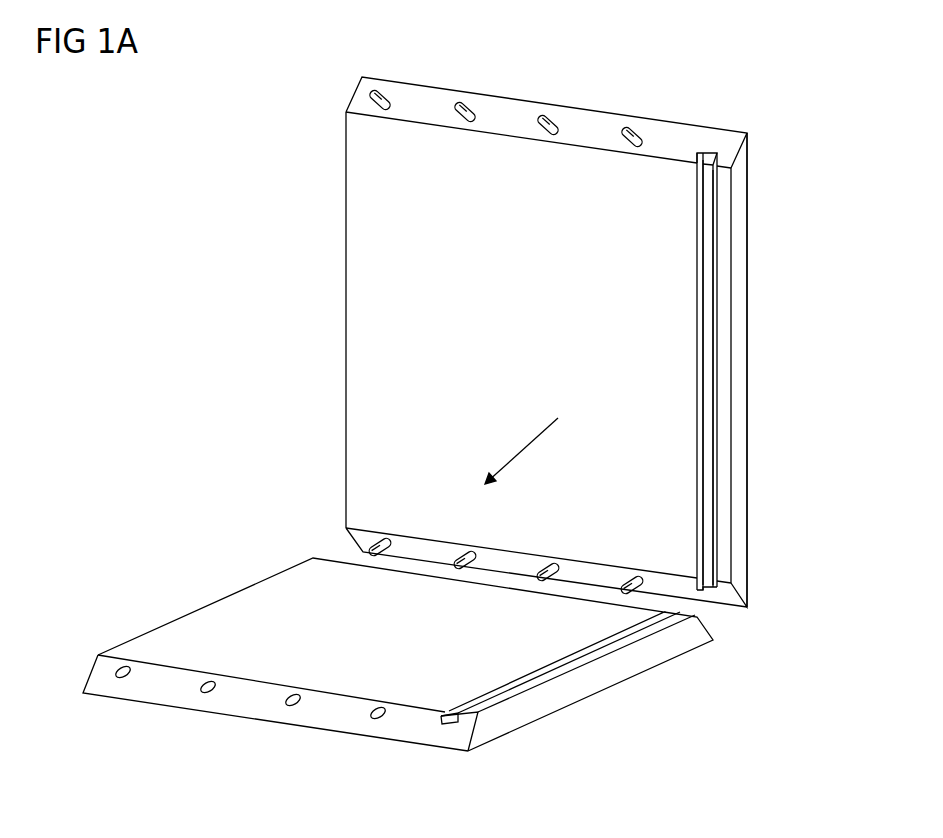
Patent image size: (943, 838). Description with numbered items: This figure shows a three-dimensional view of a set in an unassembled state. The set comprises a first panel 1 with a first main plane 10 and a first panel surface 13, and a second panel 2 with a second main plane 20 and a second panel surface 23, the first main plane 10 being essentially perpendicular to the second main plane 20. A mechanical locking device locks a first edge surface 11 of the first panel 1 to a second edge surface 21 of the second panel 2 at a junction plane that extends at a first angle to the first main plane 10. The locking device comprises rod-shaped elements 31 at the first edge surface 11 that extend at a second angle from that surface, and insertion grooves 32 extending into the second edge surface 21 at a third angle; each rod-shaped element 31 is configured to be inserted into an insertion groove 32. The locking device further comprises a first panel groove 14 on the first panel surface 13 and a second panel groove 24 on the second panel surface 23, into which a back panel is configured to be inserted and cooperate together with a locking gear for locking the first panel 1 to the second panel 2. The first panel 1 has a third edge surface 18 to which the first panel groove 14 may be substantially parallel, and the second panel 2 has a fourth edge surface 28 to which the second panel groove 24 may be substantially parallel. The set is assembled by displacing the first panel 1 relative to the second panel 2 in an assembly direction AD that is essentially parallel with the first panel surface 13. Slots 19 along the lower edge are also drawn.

The first panel 1 is at (333, 411).
The second panel 2 is at (150, 612).
The first main plane 10 is at (387, 310).
The first edge surface 11 is at (723, 597).
The first panel surface 13 is at (675, 365).
The first panel groove 14 is at (707, 430).
The third edge surface 18 is at (740, 483).
The lower slots 19 is at (412, 539).
The second main plane 20 is at (250, 615).
The second edge surface 21 is at (471, 752).
The second panel surface 23 is at (532, 657).
The second panel groove 24 is at (442, 716).
The fourth edge surface 28 is at (627, 667).
The rod-shaped element 31 is at (381, 88).
The insertion groove 32 is at (124, 676).
The assembly direction AD is at (525, 451).